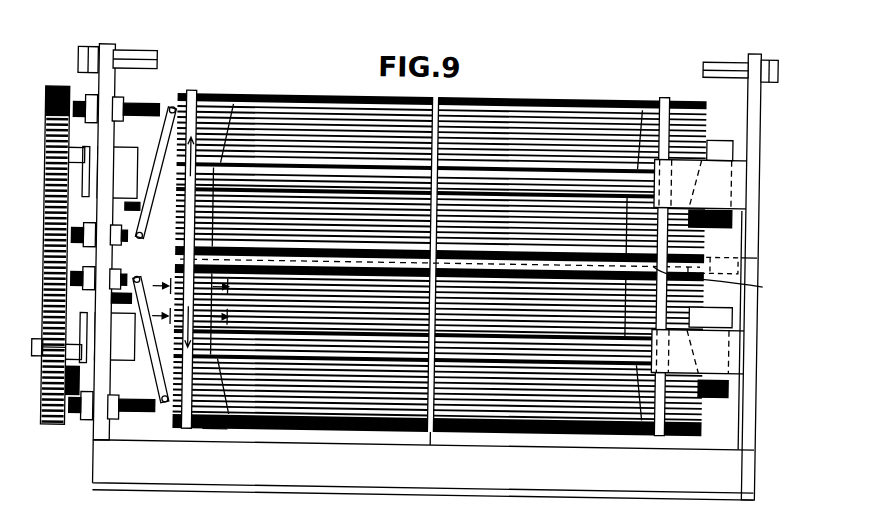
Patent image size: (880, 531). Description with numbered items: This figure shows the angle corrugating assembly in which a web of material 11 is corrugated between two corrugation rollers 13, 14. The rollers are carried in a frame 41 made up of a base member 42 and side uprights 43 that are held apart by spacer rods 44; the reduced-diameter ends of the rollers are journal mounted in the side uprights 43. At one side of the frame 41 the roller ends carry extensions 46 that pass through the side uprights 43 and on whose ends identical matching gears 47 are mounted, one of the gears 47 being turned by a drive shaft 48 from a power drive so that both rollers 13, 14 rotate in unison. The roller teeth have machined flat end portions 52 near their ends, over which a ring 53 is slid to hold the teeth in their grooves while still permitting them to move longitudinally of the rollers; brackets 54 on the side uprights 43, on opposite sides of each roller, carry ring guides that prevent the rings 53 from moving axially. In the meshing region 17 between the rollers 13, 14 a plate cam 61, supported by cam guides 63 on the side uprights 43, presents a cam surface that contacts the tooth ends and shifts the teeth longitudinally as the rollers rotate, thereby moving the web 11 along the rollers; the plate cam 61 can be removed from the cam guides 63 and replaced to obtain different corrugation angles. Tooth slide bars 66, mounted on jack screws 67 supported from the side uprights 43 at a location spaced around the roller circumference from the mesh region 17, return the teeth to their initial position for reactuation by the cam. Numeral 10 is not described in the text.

The first tube group 10 is at (177, 304).
The web of material 11 is at (233, 305).
The corrugation roller 13 is at (438, 445).
The corrugation roller 14 is at (456, 97).
The meshing region 17 is at (763, 282).
The frame 41 is at (78, 497).
The base member 42 is at (737, 478).
The side upright 43 is at (104, 50).
The spacer rod 44 is at (154, 60).
The extension 46 is at (66, 446).
The matching gear 47 is at (50, 92).
The drive shaft 48 is at (38, 362).
The machined flat end portion 52 is at (218, 430).
The ring 53 is at (190, 97).
The bracket 54 is at (122, 172).
The plate cam 61 is at (740, 265).
The cam guide 63 is at (750, 252).
The tooth slide bar 66 is at (158, 124).
The jack screw 67 is at (78, 104).